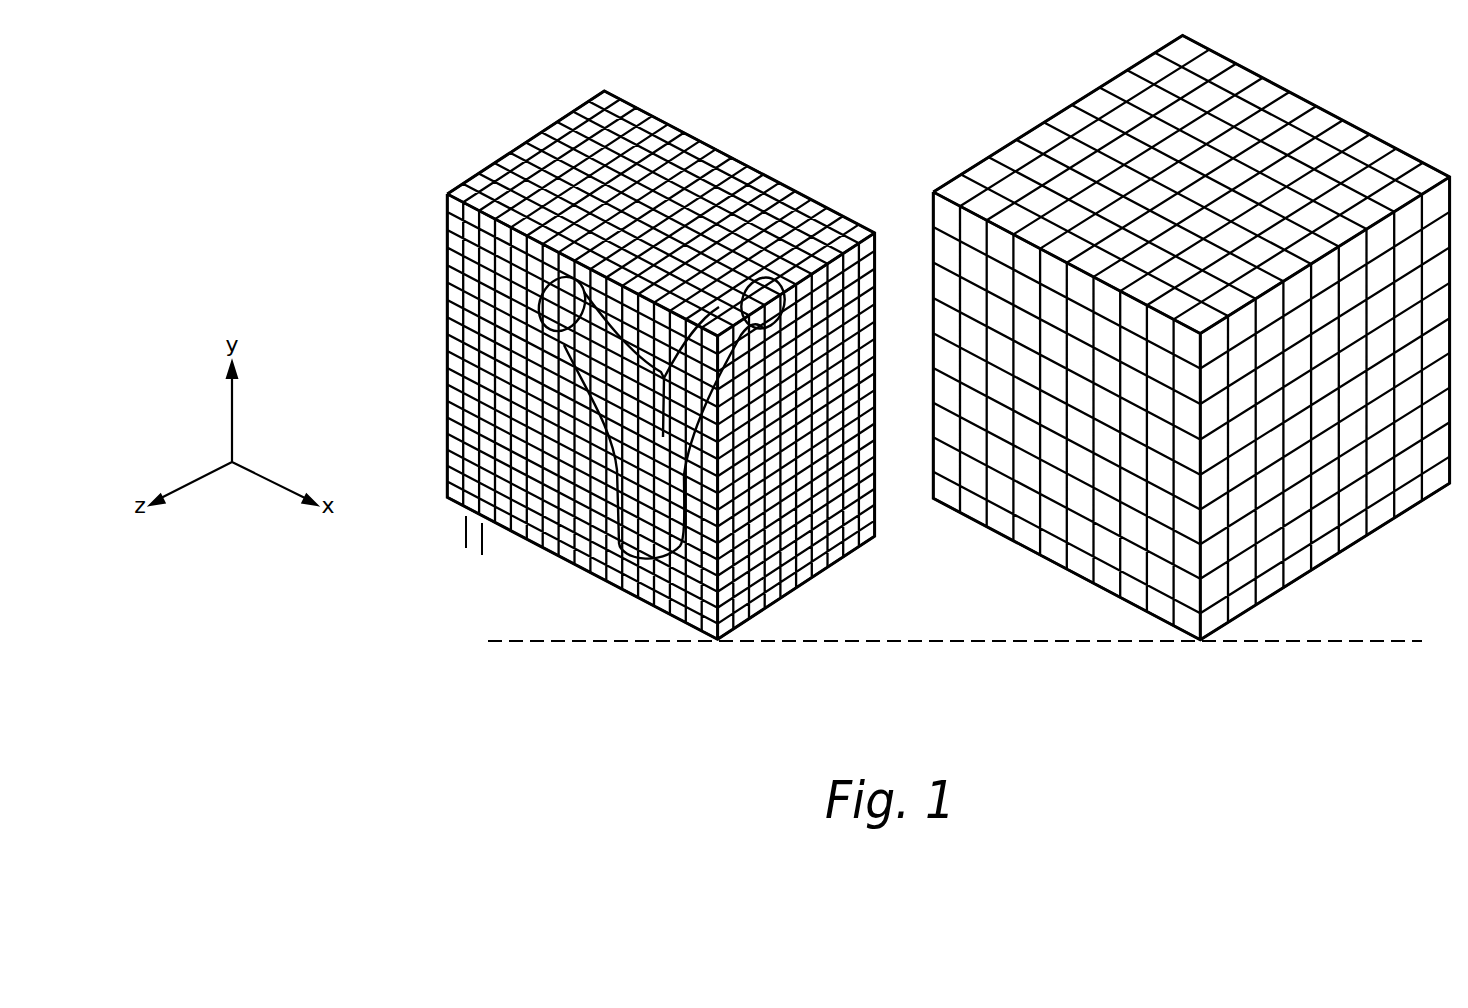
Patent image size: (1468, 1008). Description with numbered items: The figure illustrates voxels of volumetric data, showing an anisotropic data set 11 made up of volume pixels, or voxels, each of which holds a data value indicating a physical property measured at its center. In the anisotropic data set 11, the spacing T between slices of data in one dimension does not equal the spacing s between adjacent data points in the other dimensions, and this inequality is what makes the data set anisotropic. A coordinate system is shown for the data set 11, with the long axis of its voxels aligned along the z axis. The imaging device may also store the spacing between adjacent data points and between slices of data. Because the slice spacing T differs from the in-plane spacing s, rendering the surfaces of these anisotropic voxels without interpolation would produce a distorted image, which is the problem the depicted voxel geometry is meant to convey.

The anisotropic data set 11 is at (440, 352).
The spacing between slices T is at (850, 326).
The spacing between data points s is at (489, 548).